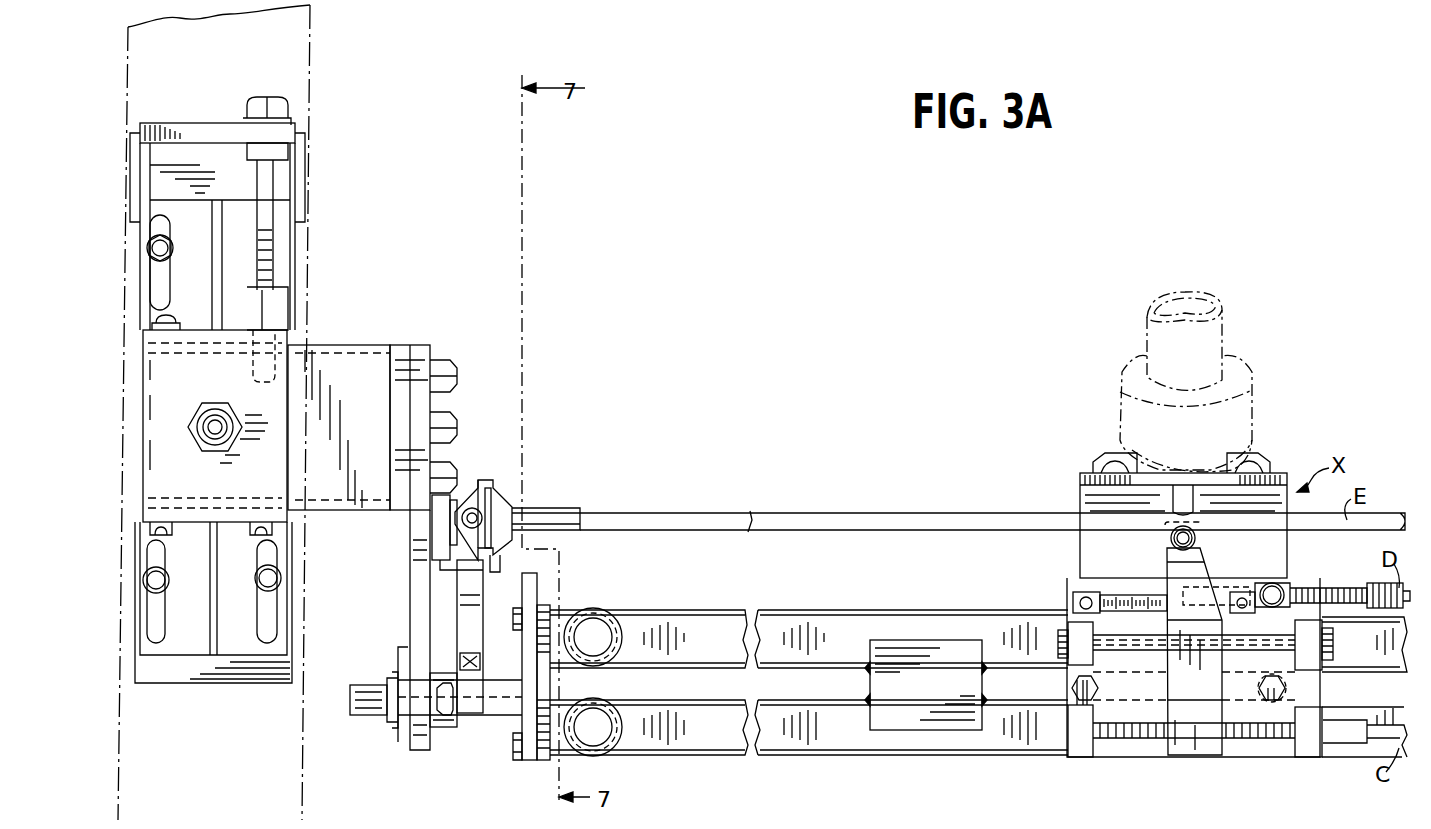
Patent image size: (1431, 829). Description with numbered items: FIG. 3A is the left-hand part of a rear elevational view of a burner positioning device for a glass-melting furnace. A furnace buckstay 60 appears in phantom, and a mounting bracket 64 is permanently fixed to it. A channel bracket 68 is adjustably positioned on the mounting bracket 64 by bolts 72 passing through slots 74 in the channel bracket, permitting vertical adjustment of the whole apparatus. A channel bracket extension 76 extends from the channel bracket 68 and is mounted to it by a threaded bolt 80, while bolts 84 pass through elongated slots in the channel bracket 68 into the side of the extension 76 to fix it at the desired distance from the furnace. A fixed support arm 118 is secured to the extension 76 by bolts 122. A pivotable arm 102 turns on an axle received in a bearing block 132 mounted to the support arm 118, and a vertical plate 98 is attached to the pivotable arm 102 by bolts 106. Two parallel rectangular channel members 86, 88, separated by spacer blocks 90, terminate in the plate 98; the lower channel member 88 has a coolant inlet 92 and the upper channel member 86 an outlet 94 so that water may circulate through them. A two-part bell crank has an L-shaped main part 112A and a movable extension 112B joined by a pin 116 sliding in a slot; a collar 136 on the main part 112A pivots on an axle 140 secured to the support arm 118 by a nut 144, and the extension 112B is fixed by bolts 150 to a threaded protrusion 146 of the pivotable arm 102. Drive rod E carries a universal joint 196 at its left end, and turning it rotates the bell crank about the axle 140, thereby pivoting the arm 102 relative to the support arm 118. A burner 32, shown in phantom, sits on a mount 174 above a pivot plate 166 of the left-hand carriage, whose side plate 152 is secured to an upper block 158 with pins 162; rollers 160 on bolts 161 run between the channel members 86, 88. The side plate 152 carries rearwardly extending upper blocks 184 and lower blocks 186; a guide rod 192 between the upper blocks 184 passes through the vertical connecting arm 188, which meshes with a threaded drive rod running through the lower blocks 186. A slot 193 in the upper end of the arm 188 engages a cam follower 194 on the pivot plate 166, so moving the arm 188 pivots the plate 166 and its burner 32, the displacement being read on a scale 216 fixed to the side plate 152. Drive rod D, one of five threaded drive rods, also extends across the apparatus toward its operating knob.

The buckstay 60 is at (313, 66).
The mounting bracket 64 is at (301, 152).
The bolts 72 is at (173, 248).
The slots 74 is at (170, 280).
The bolts 84 is at (172, 318).
The channel bracket 68 is at (160, 390).
The threaded bolt 80 is at (196, 440).
The channel bracket extension 76 is at (330, 498).
The fixed support arm 118 is at (426, 345).
The bolts 122 is at (456, 425).
The L-shaped main part of bell crank 112A is at (430, 596).
The bell crank extension 112B is at (470, 718).
The pin 116 is at (482, 660).
The bearing block 132 is at (396, 650).
The axle 140 is at (368, 705).
The nuts 144 is at (392, 722).
The threaded protrusion 146 is at (500, 692).
The collar 136 is at (436, 728).
The bolts 150 is at (450, 728).
The universal joint 196 is at (492, 479).
The pivotable arm 102 is at (528, 590).
The vertical plate 98 is at (544, 760).
The bolts 106 is at (515, 612).
The upper channel member 86 is at (777, 630).
The lower channel member 88 is at (841, 748).
The outlet 94 is at (593, 635).
The coolant inlet 92 is at (588, 767).
The spacer blocks 90 is at (868, 688).
The cylinder 32 is at (1259, 385).
The pads 174 is at (1247, 470).
The pivot plate 166 is at (1083, 535).
The slots 193 is at (1171, 541).
The cam followers 194 is at (1195, 538).
The vertical connecting arm 188 is at (1187, 745).
The side plate 152 is at (1310, 690).
The scale 216 is at (1081, 595).
The pins 162 is at (1286, 590).
The upper block 158 is at (1288, 582).
The upper blocks 184 is at (1079, 630).
The rod 192 is at (1143, 648).
The rollers 160 is at (1100, 688).
The bolts 161 is at (1071, 688).
The lower blocks 186 is at (1079, 757).
The drive rod E is at (992, 521).
The drive rod D is at (1388, 595).